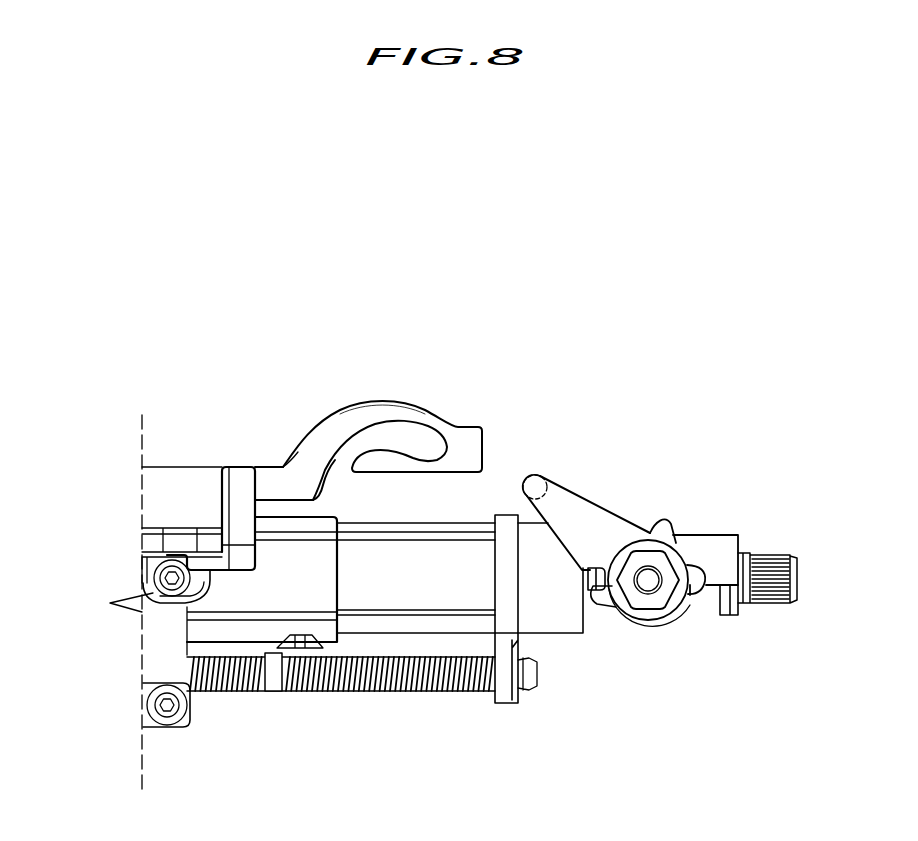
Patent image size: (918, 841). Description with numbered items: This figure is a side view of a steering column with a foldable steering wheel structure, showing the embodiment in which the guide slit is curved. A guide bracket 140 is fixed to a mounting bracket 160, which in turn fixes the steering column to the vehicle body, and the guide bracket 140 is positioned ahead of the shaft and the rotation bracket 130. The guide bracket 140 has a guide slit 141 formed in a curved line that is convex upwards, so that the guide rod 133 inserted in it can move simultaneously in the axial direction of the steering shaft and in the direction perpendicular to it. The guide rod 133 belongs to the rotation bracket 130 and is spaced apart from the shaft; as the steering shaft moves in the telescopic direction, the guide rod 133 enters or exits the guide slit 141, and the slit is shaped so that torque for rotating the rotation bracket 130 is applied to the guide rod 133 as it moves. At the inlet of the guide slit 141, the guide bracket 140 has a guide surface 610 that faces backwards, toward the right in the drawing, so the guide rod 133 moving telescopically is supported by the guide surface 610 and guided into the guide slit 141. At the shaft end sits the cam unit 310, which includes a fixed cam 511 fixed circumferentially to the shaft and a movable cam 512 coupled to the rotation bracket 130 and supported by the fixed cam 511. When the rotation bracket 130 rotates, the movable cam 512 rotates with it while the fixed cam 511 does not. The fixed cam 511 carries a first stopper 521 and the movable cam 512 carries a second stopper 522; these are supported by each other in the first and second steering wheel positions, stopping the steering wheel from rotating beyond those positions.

The rotation bracket 130 is at (584, 522).
The guide rod 133 is at (534, 475).
The guide bracket 140 is at (280, 477).
The guide slit 141 is at (397, 437).
The mounting bracket 160 is at (163, 498).
The cam unit 310 is at (672, 622).
The fixed cam 511 is at (672, 556).
The movable cam 512 is at (697, 574).
The first stopper 521 is at (590, 582).
The second stopper 522 is at (604, 597).
The guide surface 610 is at (333, 480).